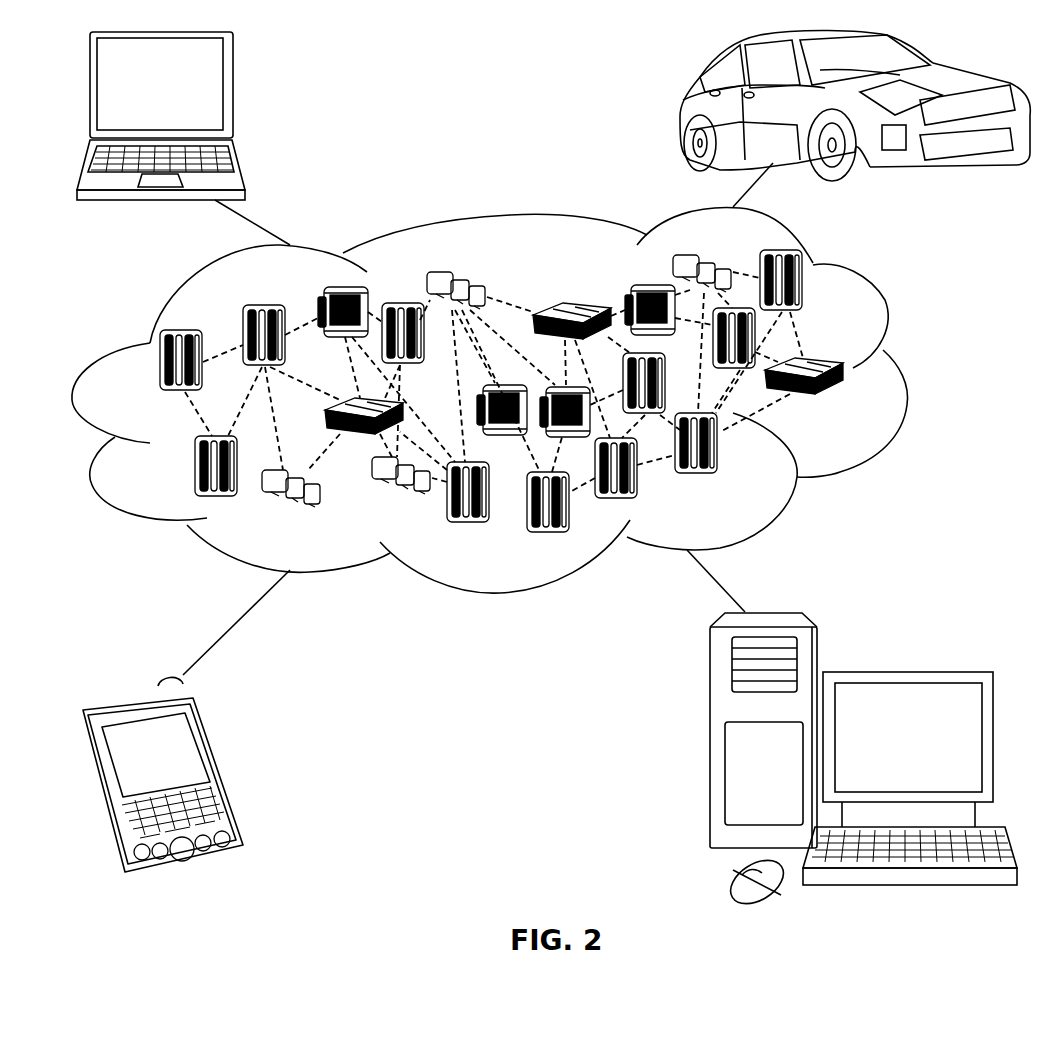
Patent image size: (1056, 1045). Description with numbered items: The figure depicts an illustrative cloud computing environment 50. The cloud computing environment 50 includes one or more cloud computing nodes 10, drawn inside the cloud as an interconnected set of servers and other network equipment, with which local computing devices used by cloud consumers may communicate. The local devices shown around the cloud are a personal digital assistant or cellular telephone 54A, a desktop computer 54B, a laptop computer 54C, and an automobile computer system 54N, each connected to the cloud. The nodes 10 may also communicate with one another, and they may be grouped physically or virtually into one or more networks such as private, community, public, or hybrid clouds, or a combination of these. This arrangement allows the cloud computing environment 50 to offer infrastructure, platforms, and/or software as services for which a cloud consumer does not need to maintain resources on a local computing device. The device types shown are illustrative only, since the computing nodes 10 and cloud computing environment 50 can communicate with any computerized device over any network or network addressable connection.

The cloud computing nodes 10 is at (517, 400).
The cloud computing environment 50 is at (903, 375).
The personal digital assistant (PDA) or cellular telephone 54A is at (220, 767).
The desktop computer 54B is at (905, 670).
The laptop computer 54C is at (233, 95).
The automobile computer system 54N is at (680, 110).